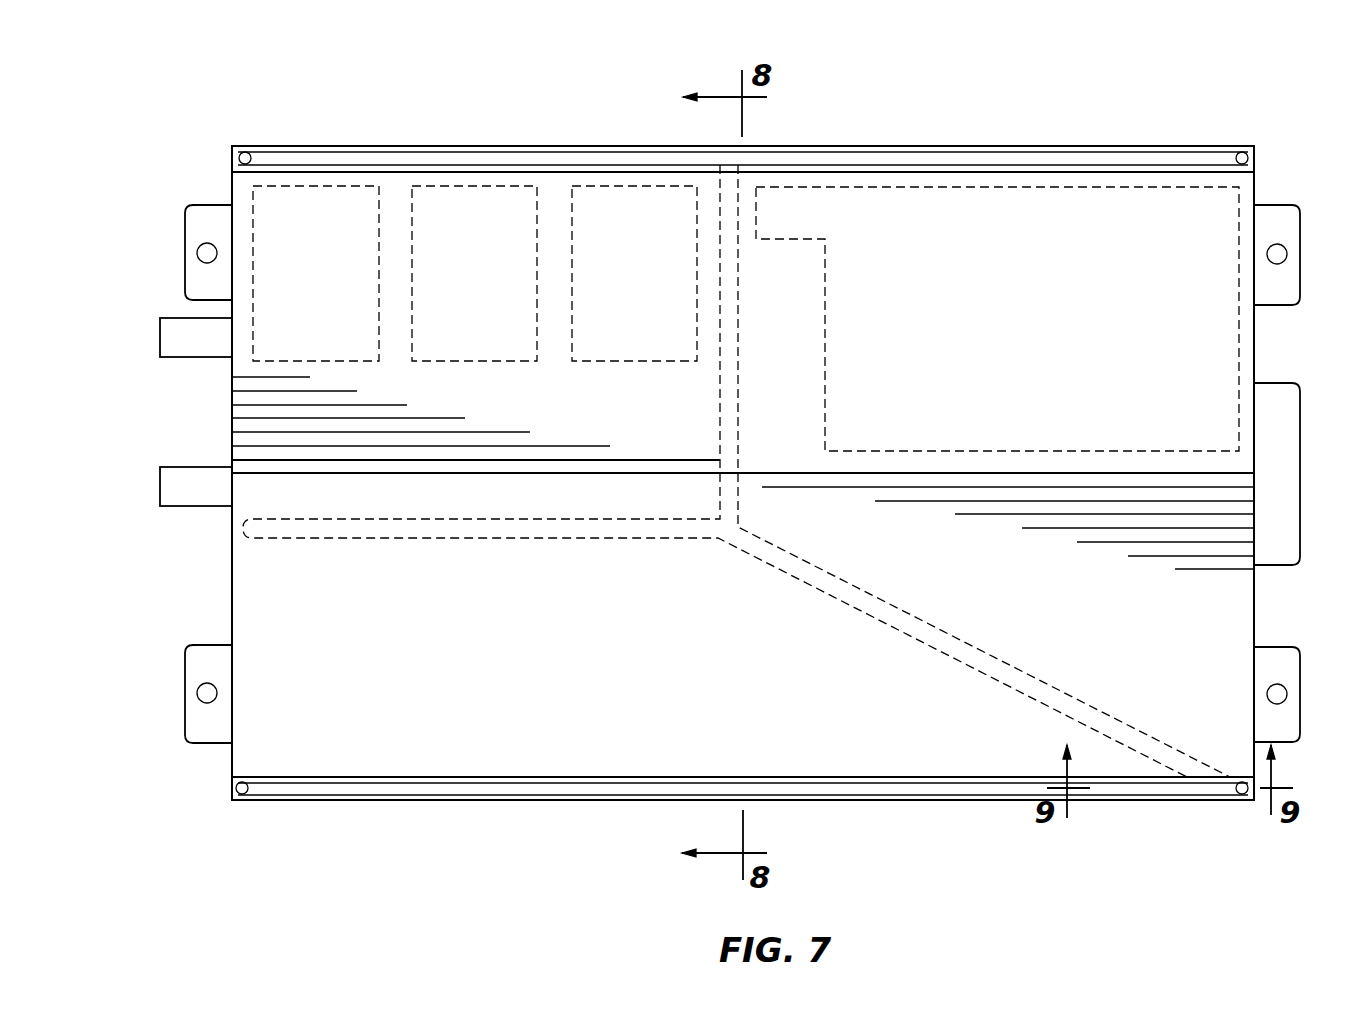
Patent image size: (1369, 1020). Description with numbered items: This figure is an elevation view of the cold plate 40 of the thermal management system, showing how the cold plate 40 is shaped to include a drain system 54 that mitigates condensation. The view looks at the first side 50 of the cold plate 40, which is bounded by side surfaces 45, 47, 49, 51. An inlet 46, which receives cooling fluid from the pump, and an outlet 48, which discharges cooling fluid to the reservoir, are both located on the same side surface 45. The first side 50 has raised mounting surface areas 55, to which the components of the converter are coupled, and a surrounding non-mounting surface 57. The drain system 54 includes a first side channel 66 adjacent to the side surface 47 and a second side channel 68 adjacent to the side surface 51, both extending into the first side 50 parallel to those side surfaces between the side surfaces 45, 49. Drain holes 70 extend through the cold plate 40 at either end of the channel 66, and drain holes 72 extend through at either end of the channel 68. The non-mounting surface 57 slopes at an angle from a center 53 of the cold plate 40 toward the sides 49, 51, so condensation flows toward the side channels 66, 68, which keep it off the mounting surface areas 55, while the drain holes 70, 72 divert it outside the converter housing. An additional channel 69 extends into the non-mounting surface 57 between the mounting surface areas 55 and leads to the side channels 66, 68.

The cold plate 40 is at (226, 105).
The side surface 45 is at (232, 557).
The inlet 46 is at (185, 338).
The side surface 47 is at (568, 146).
The outlet 48 is at (186, 487).
The side surface 49 is at (1255, 620).
The first side 50 is at (1218, 343).
The side surface 51 is at (563, 800).
The center 53 is at (1193, 472).
The drain system 54 is at (1112, 104).
The mounting surface 55 is at (290, 205).
The non-mounting surface 57 is at (1165, 627).
The first side channel 66 is at (905, 150).
The second side channel 68 is at (957, 792).
The additional channel 69 is at (590, 545).
The drain hole 70 is at (238, 152).
The drain hole 72 is at (247, 797).